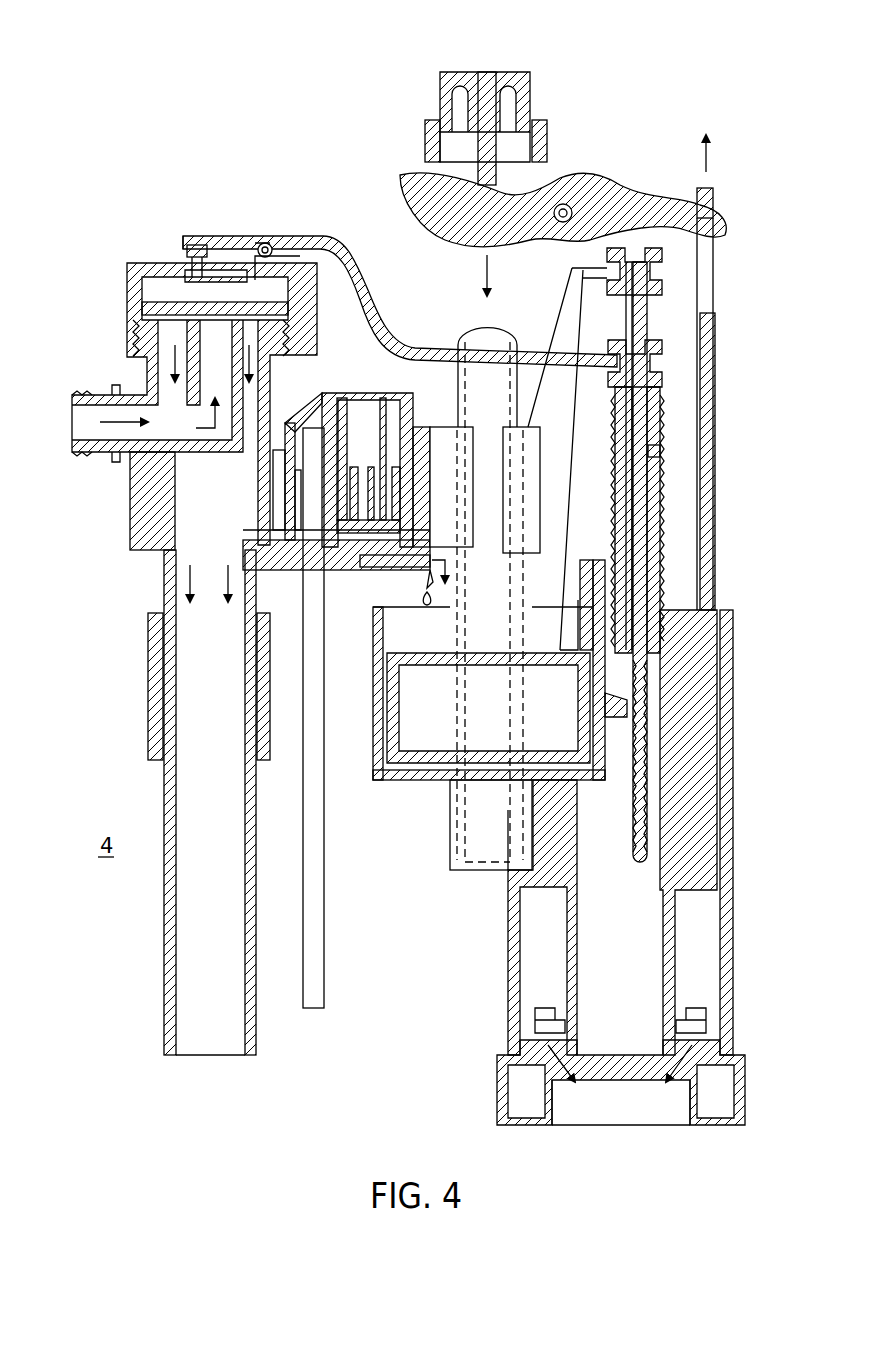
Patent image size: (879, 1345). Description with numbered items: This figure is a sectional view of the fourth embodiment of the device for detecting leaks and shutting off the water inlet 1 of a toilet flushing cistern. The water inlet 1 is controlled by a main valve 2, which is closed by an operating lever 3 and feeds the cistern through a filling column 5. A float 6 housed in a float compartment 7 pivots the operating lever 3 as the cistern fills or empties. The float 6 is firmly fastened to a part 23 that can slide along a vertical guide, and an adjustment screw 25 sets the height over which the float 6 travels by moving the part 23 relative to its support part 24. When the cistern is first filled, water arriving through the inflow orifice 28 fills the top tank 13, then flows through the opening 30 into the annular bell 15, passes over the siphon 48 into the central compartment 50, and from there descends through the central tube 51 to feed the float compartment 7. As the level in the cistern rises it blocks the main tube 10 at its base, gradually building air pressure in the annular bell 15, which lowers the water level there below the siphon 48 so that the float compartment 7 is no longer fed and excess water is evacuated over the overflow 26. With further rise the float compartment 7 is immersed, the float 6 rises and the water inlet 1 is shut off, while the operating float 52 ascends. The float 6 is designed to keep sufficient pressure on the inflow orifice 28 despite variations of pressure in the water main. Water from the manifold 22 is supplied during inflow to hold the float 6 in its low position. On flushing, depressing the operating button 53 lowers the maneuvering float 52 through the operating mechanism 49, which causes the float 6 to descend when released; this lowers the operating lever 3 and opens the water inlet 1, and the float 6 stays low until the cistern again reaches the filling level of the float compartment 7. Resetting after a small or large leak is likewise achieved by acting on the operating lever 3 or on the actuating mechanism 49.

The water inlet 1 is at (66, 432).
The main valve 2 is at (150, 305).
The operating lever 3 is at (337, 257).
The filling column 5 is at (168, 795).
The float 6 is at (430, 740).
The float compartment 7 is at (380, 775).
The main tube 10 is at (315, 922).
The top tank 13 is at (422, 430).
The annular bell 15 is at (310, 407).
The manifold 22 is at (441, 582).
The part 23 is at (662, 453).
The support part 24 is at (625, 430).
The adjustment screw 25 is at (620, 250).
The overflow 26 is at (282, 437).
The inflow orifice 28 is at (190, 262).
The opening 30 is at (296, 510).
The siphon 48 is at (345, 492).
The operating mechanism 49 is at (596, 125).
The central compartment 50 is at (367, 410).
The central tube 51 is at (365, 555).
The operating float 52 is at (502, 602).
The operating button 53 is at (483, 92).